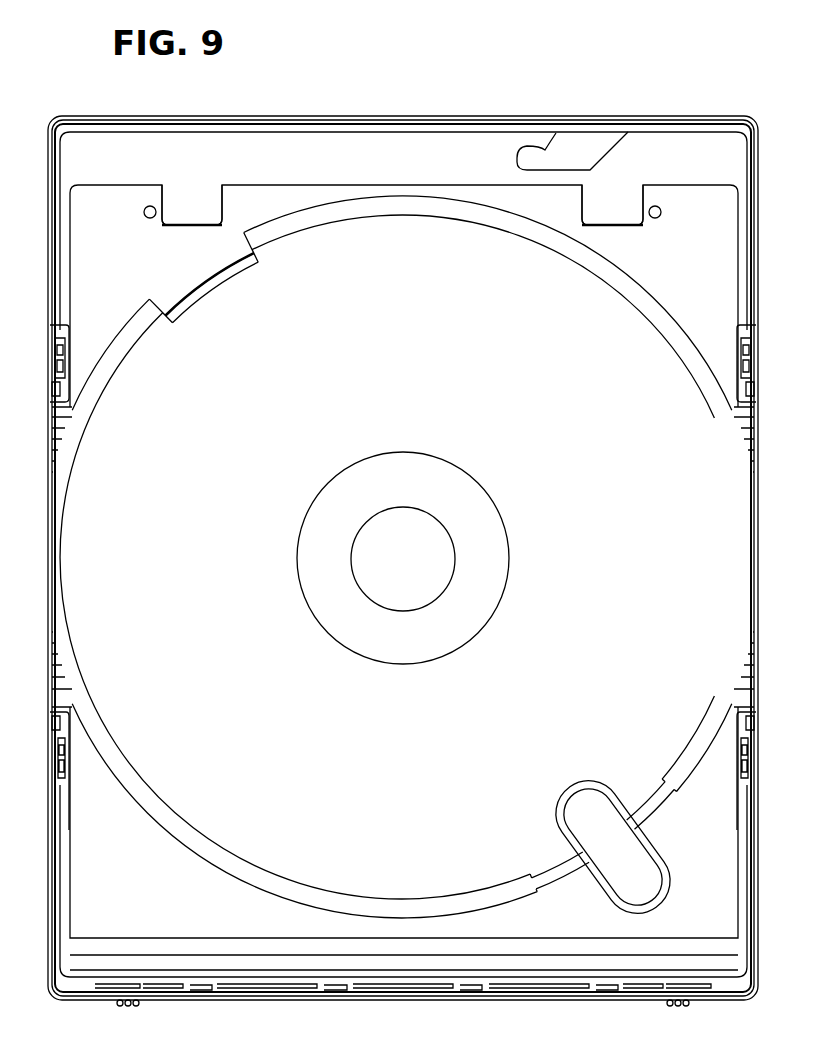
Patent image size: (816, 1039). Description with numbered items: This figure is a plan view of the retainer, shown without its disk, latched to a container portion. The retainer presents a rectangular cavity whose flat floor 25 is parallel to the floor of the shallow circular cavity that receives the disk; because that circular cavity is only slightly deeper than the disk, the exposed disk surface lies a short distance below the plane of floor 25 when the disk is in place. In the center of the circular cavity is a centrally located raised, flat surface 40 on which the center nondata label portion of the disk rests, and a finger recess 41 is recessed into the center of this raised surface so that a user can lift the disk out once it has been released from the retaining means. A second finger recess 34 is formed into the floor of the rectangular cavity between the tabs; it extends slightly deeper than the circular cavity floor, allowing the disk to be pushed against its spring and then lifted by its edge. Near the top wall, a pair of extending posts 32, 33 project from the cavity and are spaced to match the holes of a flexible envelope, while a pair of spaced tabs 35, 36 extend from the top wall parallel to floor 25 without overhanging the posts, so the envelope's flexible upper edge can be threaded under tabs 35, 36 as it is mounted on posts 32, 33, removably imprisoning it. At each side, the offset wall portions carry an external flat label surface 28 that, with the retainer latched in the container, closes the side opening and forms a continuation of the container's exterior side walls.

The flat floor 25 is at (712, 290).
The external flat surface 28 is at (50, 565).
The post 32 is at (146, 217).
The post 33 is at (660, 217).
The finger recess 34 is at (598, 838).
The tab 35 is at (612, 210).
The tab 36 is at (191, 210).
The raised flat surface 40 is at (480, 545).
The finger recess 41 is at (415, 530).